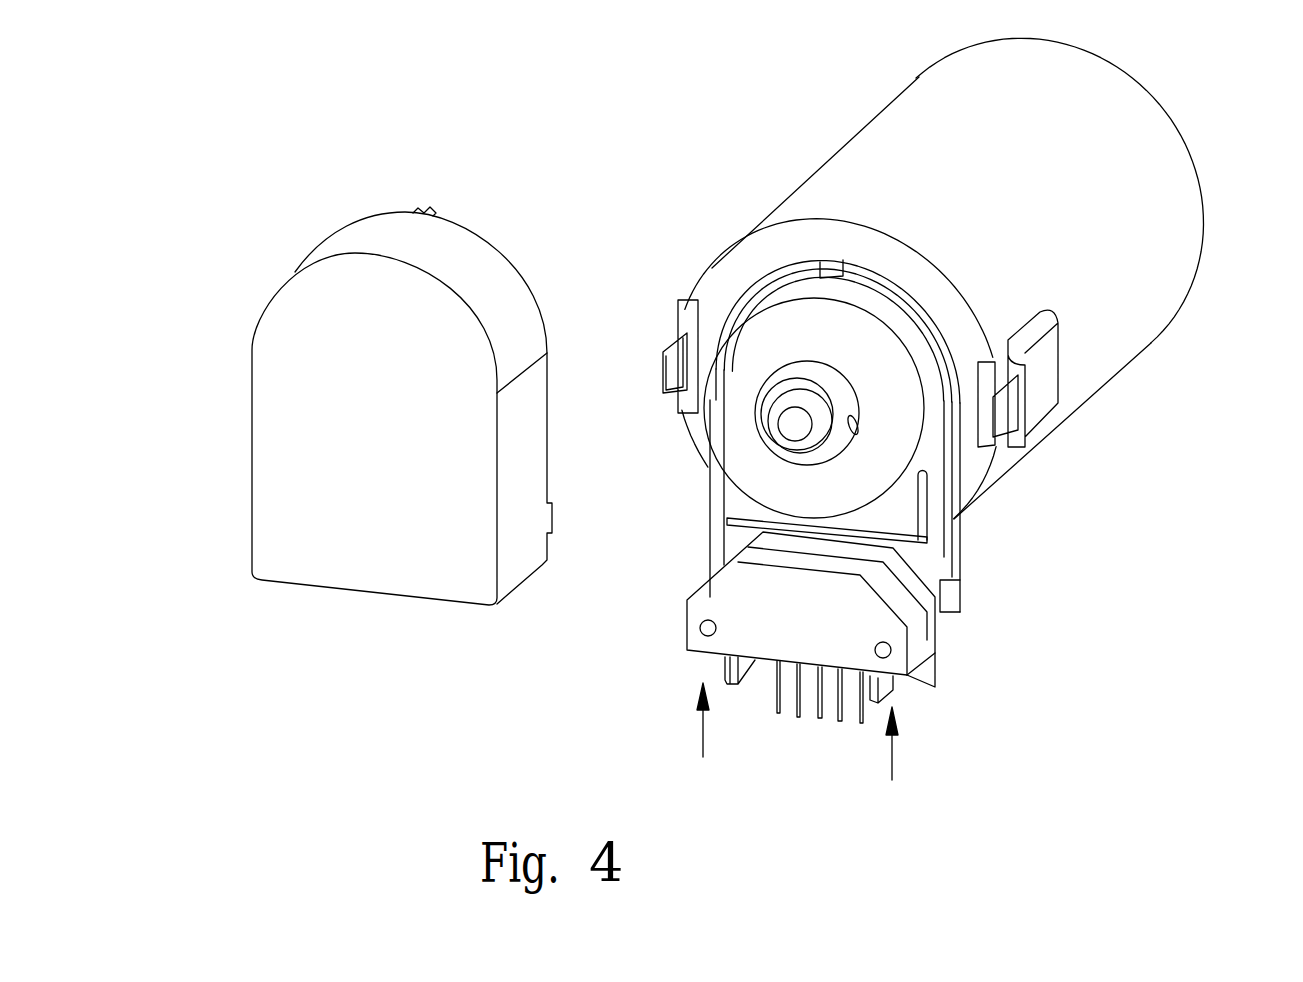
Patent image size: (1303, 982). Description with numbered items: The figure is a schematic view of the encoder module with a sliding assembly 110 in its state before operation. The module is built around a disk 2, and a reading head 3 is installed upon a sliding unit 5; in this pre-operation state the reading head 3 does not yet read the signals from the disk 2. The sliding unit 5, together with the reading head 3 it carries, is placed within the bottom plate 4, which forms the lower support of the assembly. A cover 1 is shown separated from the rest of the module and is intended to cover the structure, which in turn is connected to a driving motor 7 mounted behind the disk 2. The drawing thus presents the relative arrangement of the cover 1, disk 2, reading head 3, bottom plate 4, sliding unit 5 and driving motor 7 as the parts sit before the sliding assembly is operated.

The encoder module with a sliding assembly 110 is at (232, 235).
The cover 1 is at (288, 445).
The disk 2 is at (785, 335).
The reading head 3 is at (740, 592).
The bottom plate 4 is at (935, 533).
The sliding unit 5 is at (933, 673).
The driving motor 7 is at (1117, 152).